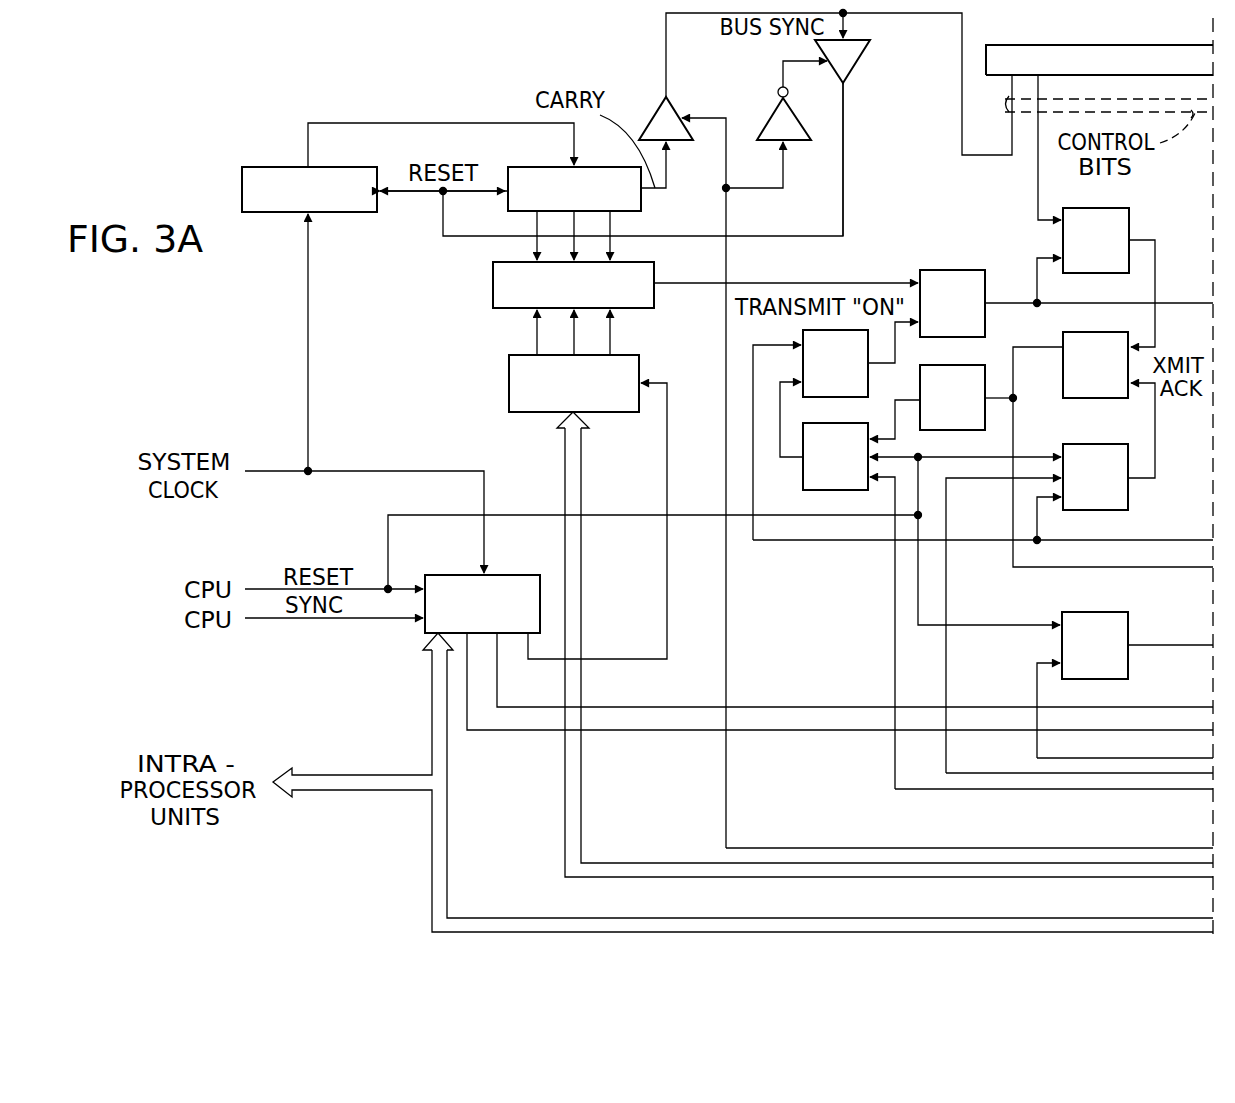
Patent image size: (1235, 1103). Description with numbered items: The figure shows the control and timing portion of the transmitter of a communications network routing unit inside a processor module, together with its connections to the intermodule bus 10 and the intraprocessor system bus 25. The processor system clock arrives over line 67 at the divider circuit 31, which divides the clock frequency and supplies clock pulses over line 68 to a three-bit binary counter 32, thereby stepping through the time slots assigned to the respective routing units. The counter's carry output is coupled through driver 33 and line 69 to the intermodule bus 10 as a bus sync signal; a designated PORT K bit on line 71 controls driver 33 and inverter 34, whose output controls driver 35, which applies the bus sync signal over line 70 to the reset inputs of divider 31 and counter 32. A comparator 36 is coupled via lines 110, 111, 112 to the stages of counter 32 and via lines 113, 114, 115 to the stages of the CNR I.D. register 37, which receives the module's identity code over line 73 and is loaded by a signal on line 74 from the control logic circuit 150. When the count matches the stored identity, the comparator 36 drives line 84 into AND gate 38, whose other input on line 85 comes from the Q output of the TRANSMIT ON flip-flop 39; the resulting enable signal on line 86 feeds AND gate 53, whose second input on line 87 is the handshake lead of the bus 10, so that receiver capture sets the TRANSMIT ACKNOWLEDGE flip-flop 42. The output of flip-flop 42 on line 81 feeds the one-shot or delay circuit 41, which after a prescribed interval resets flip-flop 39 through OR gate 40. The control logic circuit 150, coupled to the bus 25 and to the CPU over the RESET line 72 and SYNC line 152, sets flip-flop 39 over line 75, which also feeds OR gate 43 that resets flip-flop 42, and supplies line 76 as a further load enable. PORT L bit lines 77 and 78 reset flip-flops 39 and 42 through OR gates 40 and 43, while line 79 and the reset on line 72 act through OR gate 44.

The intermodule bus 10 is at (1065, 45).
The intraprocessor system bus 25 is at (431, 708).
The divider circuit 31 is at (288, 170).
The three-bit binary counter 32 is at (543, 170).
The driver 33 is at (663, 115).
The inverter 34 is at (775, 118).
The driver 35 is at (864, 50).
The comparator 36 is at (493, 297).
The CNR I.D. register 37 is at (509, 385).
The AND gate 38 is at (953, 270).
The TRANSMIT ON flip-flop 39 is at (803, 363).
The OR gate 40 is at (812, 478).
The one-shot or delay circuit 41 is at (922, 380).
The TRANSMIT ACKNOWLEDGE flip-flop 42 is at (1088, 393).
The OR gate 43 is at (1120, 498).
The OR gate 44 is at (1105, 613).
The AND gate 53 is at (1105, 208).
The system clock line 67 is at (307, 334).
The clock pulse line 68 is at (452, 123).
The carry output line 69 is at (666, 24).
The reset line 70 is at (843, 143).
The PORT K output line 71 is at (724, 261).
The RESET line 72 is at (553, 513).
The I.D. code line 73 is at (565, 790).
The register load line 74 is at (553, 660).
The set and load enable line 75 is at (825, 540).
The load enable line 76 is at (820, 733).
The PORT L reset line 77 is at (893, 615).
The PORT L reset line 78 is at (944, 660).
The PORT L interrupt disable line 79 is at (1035, 681).
The flip-flop output line 81 is at (1055, 568).
The comparator output line 84 is at (872, 283).
The Q output line 85 is at (897, 352).
The enable line 86 is at (1038, 258).
The handshake line 87 is at (1036, 182).
The counter stage line 110 is at (535, 222).
The counter stage line 111 is at (573, 243).
The counter stage line 112 is at (612, 222).
The register stage line 113 is at (535, 327).
The register stage line 114 is at (572, 338).
The register stage line 115 is at (611, 330).
The control logic circuit 150 is at (470, 577).
The SYNC line 152 is at (265, 620).